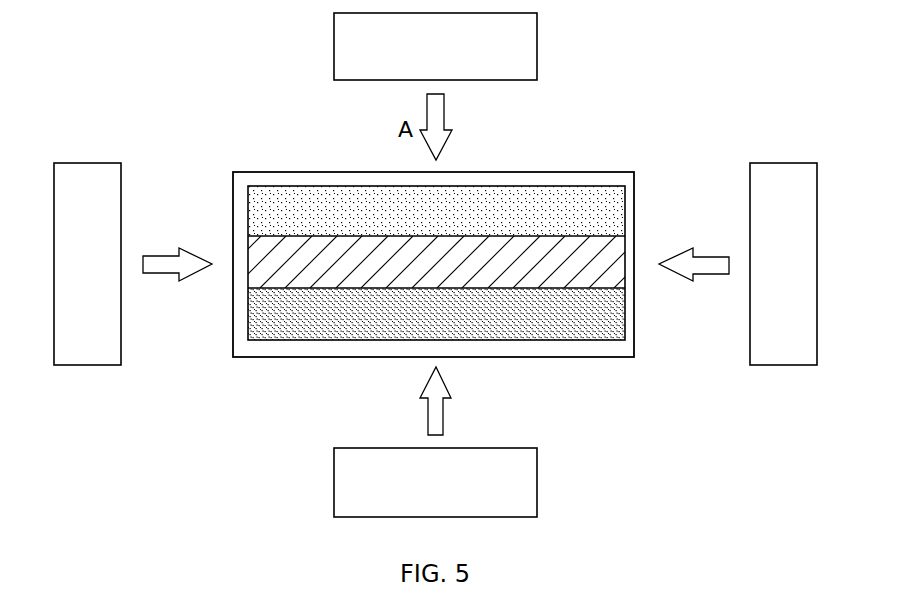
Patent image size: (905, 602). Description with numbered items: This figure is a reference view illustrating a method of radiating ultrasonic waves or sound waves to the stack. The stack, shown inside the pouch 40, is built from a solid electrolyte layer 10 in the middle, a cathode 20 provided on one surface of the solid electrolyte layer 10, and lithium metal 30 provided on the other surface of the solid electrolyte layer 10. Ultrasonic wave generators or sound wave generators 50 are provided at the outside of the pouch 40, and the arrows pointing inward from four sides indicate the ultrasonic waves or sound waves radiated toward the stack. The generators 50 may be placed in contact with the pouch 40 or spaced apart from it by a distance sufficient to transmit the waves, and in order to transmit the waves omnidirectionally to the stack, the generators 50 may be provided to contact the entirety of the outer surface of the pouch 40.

The solid electrolyte layer 10 is at (323, 255).
The cathode 20 is at (572, 203).
The lithium metal 30 is at (578, 327).
The pouch 40 is at (268, 178).
The ultrasonic wave generators or sound wave generators 50 is at (537, 47).